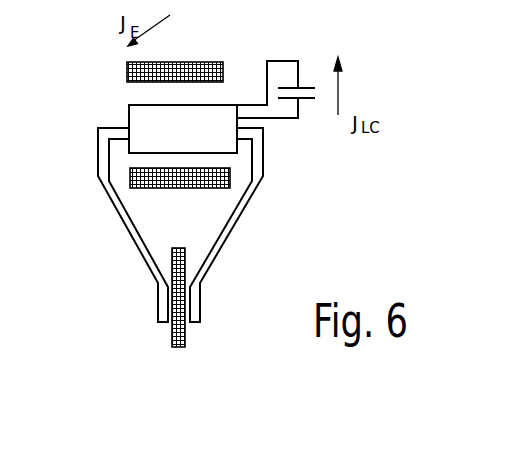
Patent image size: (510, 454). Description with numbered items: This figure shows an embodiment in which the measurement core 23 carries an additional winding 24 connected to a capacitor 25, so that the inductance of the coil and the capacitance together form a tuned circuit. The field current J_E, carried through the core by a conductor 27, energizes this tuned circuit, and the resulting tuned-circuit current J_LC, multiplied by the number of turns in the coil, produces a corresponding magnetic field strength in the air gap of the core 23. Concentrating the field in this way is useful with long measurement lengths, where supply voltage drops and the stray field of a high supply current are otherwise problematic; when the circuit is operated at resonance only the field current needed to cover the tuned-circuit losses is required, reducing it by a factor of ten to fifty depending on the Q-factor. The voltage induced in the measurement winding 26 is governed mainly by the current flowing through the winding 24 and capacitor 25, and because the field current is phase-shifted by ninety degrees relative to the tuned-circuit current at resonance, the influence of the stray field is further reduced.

The measurement core 23 is at (143, 252).
The winding 24 is at (203, 127).
The capacitor 25 is at (280, 96).
The measurement winding 26 is at (178, 348).
The conductor 27 is at (127, 180).